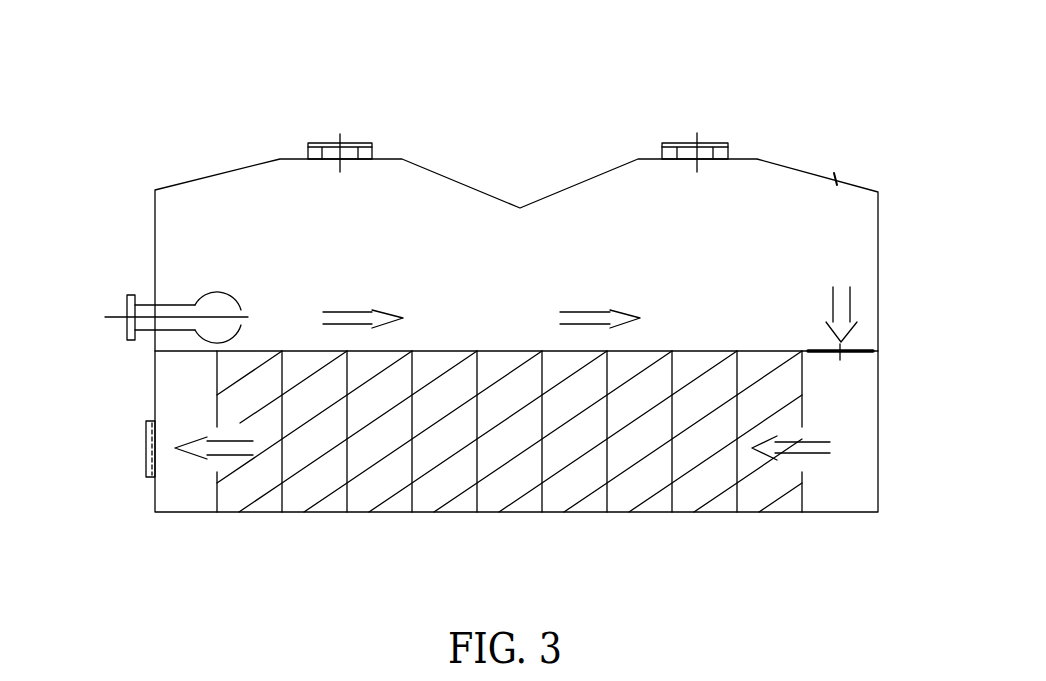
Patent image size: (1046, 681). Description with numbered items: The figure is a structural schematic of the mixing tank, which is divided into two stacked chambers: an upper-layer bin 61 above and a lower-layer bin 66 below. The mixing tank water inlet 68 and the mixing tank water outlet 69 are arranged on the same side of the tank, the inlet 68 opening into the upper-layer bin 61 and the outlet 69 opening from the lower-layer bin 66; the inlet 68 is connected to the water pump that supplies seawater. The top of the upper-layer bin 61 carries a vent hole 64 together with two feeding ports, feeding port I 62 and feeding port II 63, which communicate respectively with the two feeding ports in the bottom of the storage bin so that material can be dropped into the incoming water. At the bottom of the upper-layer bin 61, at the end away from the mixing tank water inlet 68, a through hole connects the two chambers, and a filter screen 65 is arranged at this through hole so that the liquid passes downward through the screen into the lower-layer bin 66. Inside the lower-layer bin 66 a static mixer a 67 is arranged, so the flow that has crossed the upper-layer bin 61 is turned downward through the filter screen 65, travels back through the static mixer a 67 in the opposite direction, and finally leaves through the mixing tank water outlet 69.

The upper-layer bin 61 is at (190, 220).
The feeding port I 62 is at (353, 148).
The feeding port II 63 is at (680, 147).
The vent hole 64 is at (838, 176).
The filter screen 65 is at (855, 350).
The lower-layer bin 66 is at (843, 483).
The static mixer a 67 is at (435, 495).
The mixing tank water inlet 68 is at (127, 307).
The mixing tank water outlet 69 is at (145, 443).